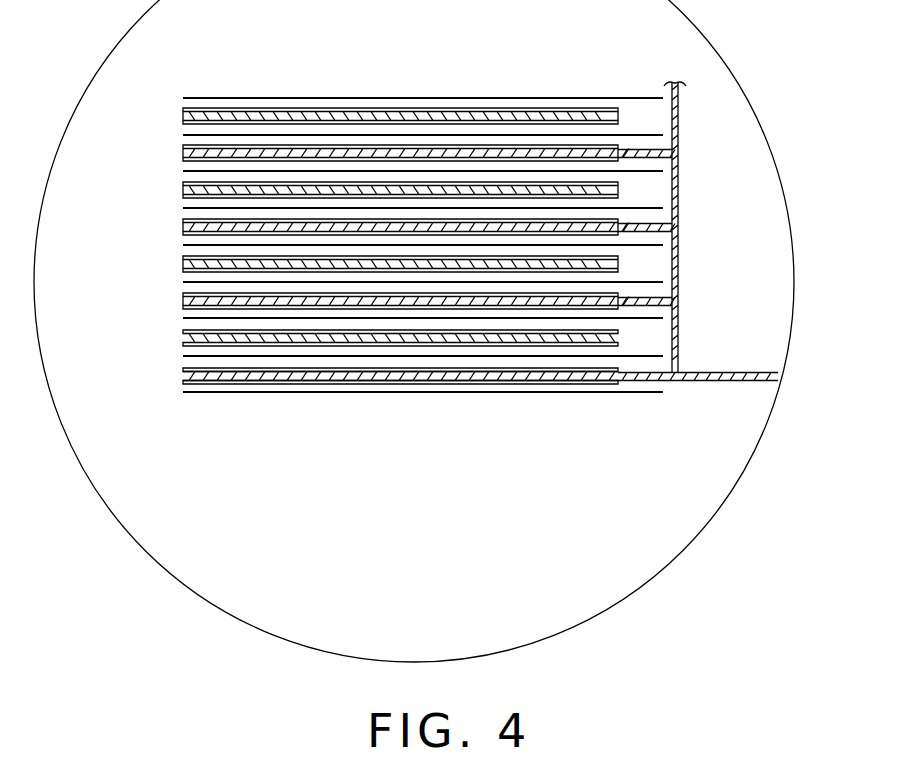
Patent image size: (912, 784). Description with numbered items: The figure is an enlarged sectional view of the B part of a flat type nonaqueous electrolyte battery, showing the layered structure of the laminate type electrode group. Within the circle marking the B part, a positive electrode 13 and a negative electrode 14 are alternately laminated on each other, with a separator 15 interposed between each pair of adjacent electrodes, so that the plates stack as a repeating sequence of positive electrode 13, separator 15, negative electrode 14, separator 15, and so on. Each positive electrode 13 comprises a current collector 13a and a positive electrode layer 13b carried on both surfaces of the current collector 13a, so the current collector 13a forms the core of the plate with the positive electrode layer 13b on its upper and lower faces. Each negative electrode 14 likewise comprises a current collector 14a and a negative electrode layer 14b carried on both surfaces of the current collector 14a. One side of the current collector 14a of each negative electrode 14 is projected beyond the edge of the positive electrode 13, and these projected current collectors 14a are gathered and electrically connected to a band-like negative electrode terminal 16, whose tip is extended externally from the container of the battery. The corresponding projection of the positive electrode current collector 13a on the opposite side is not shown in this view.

The positive electrode 13 is at (332, 251).
The current collector 13a is at (184, 338).
The positive electrode layer 13b is at (184, 331).
The negative electrode 14 is at (363, 311).
The current collector 14a is at (650, 150).
The negative electrode layer 14b is at (187, 369).
The separator 15 is at (484, 98).
The negative electrode terminal 16 is at (726, 380).
The B part B is at (673, 560).